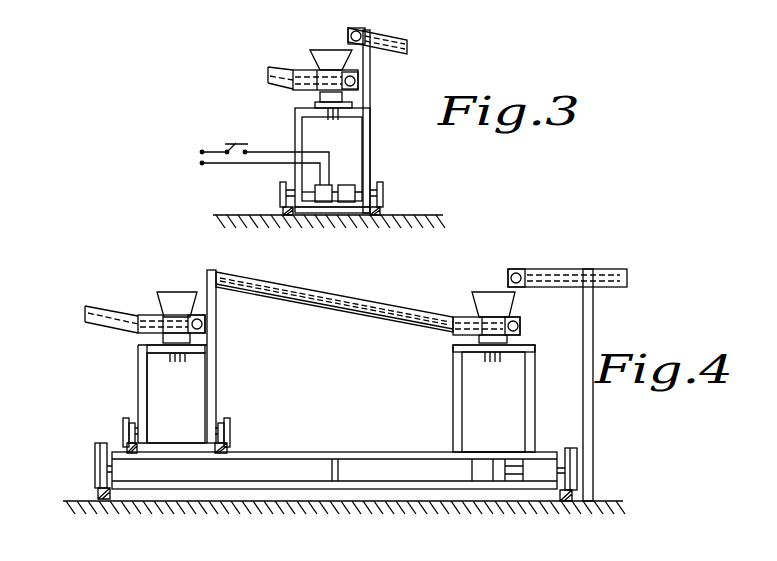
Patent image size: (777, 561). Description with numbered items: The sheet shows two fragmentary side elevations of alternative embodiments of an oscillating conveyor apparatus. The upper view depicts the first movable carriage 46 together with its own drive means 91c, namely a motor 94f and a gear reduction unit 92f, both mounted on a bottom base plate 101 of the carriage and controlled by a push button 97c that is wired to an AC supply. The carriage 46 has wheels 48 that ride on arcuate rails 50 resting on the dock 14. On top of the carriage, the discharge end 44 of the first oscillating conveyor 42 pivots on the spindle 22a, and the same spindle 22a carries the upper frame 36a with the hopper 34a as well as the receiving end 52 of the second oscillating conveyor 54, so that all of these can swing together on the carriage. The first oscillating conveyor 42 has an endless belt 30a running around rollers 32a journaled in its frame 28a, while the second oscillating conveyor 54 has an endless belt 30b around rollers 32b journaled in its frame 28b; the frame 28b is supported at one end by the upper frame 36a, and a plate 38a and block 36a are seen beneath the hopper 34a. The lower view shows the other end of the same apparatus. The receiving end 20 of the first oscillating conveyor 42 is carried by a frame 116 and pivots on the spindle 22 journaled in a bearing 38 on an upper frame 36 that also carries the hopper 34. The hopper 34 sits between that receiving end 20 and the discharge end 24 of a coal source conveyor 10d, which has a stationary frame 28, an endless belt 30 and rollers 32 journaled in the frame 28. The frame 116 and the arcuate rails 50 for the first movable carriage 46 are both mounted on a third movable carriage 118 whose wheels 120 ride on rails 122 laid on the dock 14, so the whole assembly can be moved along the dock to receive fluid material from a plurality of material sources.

In FIG. 4, the coal source conveyor 10d is at (618, 268).
In FIG. 3, the dock 14 is at (443, 218).
In FIG. 4, the dock 14 is at (298, 521).
In FIG. 4, the receiving end 20 is at (480, 288).
In FIG. 4, the pivot or spindle 22 is at (492, 362).
In FIG. 3, the pivot or spindle 22a is at (322, 116).
In FIG. 4, the pivot or spindle 22a is at (178, 358).
In FIG. 4, the discharge end 24 is at (527, 258).
In FIG. 4, the stationary frame 28 is at (595, 316).
In FIG. 3, the frame 28a is at (406, 41).
In FIG. 4, the frame 28a is at (370, 322).
In FIG. 3, the frame 28b is at (270, 86).
In FIG. 4, the frame 28b is at (117, 334).
In FIG. 4, the endless belt 30 is at (565, 268).
In FIG. 3, the endless belt 30a is at (405, 50).
In FIG. 4, the endless belt 30a is at (398, 307).
In FIG. 3, the endless belt 30b is at (303, 70).
In FIG. 4, the endless belt 30b is at (103, 306).
In FIG. 4, the roller 32 is at (519, 272).
In FIG. 3, the roller 32a is at (352, 29).
In FIG. 4, the roller 32a is at (200, 313).
In FIG. 3, the roller 32b is at (355, 86).
In FIG. 4, the roller 32b is at (203, 322).
In FIG. 4, the hopper 34 is at (478, 294).
In FIG. 3, the hopper 34a is at (333, 54).
In FIG. 4, the hopper 34a is at (172, 292).
In FIG. 4, the upper frame 36 is at (510, 339).
In FIG. 3, the upper frame 36a is at (322, 97).
In FIG. 4, the upper frame 36a is at (176, 338).
In FIG. 4, the bearing 38 is at (462, 350).
In FIG. 3, the mounting plate 38a is at (316, 105).
In FIG. 4, the mounting plate 38a is at (206, 350).
In FIG. 3, the first oscillating conveyor 42 is at (398, 63).
In FIG. 4, the first oscillating conveyor 42 is at (352, 292).
In FIG. 3, the discharge end 44 is at (364, 22).
In FIG. 4, the discharge end 44 is at (207, 259).
In FIG. 3, the first movable carriage 46 is at (373, 131).
In FIG. 4, the first movable carriage 46 is at (217, 392).
In FIG. 3, the wheels 48 is at (280, 189).
In FIG. 4, the wheels 48 is at (124, 425).
In FIG. 3, the arcuate rails 50 is at (284, 211).
In FIG. 4, the arcuate rails 50 is at (215, 446).
In FIG. 3, the receiving end 52 is at (361, 82).
In FIG. 4, the receiving end 52 is at (219, 327).
In FIG. 3, the second oscillating conveyor 54 is at (302, 61).
In FIG. 4, the second oscillating conveyor 54 is at (88, 302).
In FIG. 3, the drive means 91c is at (350, 182).
In FIG. 3, the gear reduction unit 92f is at (350, 203).
In FIG. 3, the motor 94f is at (323, 203).
In FIG. 3, the push button 97c is at (234, 143).
In FIG. 3, the bottom base plate 101 is at (300, 213).
In FIG. 4, the frame 116 is at (453, 395).
In FIG. 4, the third movable carriage 118 is at (320, 450).
In FIG. 4, the wheels 120 is at (95, 458).
In FIG. 4, the rails 122 is at (98, 494).